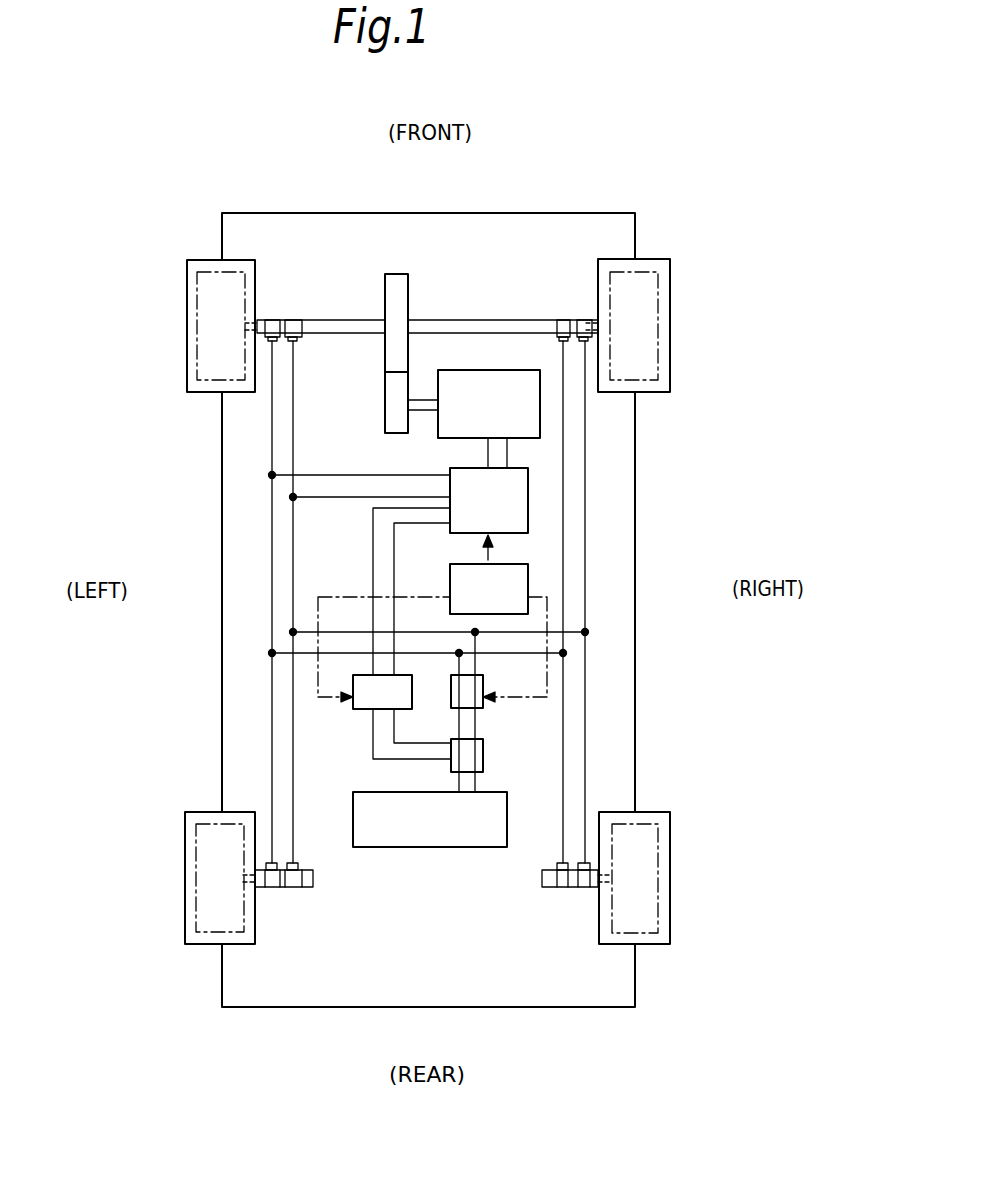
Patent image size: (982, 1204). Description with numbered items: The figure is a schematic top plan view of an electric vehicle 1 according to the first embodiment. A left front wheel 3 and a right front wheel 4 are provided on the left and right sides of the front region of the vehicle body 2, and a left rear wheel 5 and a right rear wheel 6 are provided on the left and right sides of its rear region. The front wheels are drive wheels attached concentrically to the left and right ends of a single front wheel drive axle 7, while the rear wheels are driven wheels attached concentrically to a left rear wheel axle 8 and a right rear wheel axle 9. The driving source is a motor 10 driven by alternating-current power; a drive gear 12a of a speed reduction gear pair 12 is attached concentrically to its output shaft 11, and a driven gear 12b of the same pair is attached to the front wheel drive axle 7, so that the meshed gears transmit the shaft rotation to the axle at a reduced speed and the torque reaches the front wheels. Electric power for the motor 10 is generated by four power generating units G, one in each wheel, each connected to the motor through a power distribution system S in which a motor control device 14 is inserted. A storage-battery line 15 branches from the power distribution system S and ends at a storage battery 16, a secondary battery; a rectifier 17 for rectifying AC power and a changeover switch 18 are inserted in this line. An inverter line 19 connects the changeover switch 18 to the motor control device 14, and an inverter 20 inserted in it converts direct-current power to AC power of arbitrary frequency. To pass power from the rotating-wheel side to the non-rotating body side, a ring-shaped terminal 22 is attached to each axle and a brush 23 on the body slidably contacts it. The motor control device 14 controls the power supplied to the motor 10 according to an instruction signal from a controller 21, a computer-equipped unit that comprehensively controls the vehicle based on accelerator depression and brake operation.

The electric vehicle 1 is at (700, 206).
The vehicle body 2 is at (636, 438).
The left front wheel 3 is at (187, 285).
The right front wheel 4 is at (670, 272).
The left rear wheel 5 is at (185, 917).
The right rear wheel 6 is at (670, 912).
The front wheel drive axle 7 is at (455, 319).
The left rear wheel axle 8 is at (313, 887).
The right rear wheel axle 9 is at (547, 887).
The motor 10 is at (455, 370).
The output shaft 11 is at (423, 410).
The speed reduction gear pair 12 is at (354, 341).
The drive gear 12a is at (392, 412).
The driven gear 12b is at (386, 297).
The motor control device 14 is at (528, 497).
The storage-battery line 15 is at (493, 722).
The storage battery 16 is at (431, 847).
The rectifier 17 is at (485, 705).
The changeover switch 18 is at (485, 755).
The inverter line 19 is at (368, 741).
The inverter 20 is at (355, 710).
The controller 21 is at (528, 572).
The ring-shaped terminal 22 is at (277, 318).
The brush 23 is at (268, 343).
The power distribution system S is at (268, 567).
The power generating unit G is at (197, 365).